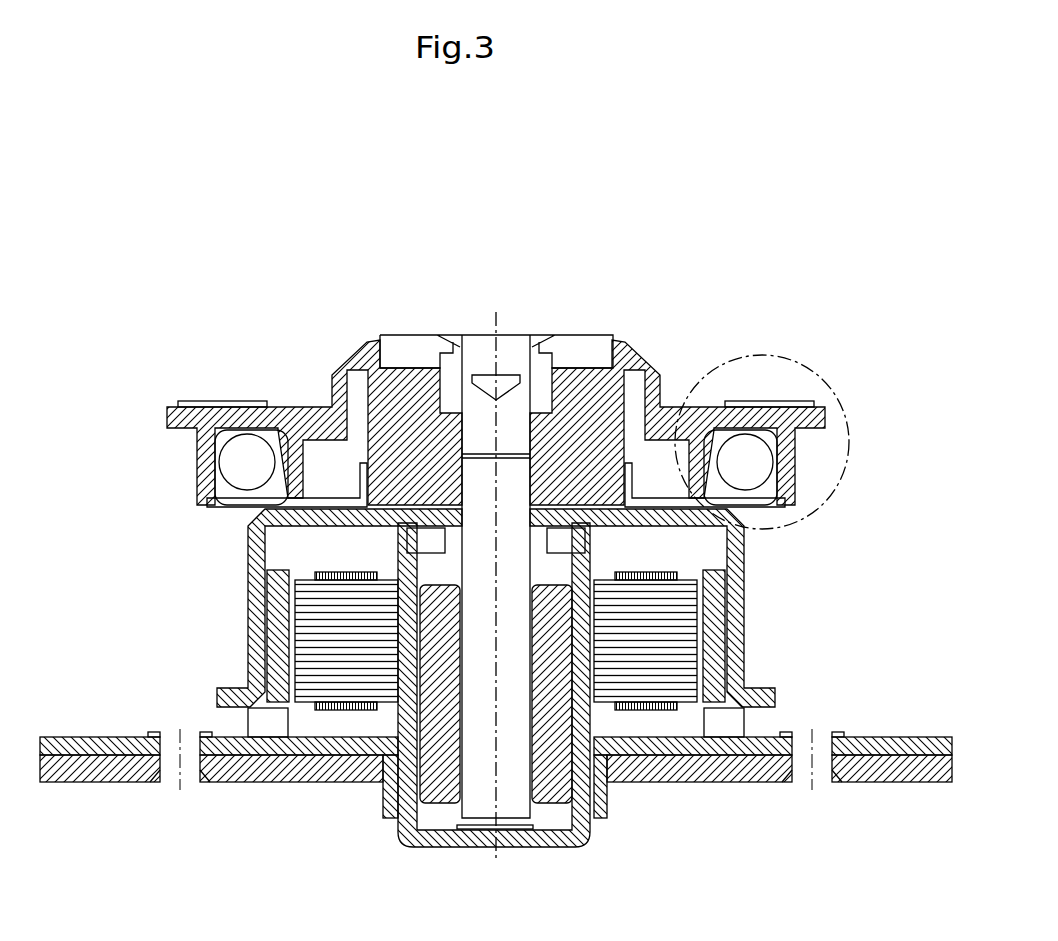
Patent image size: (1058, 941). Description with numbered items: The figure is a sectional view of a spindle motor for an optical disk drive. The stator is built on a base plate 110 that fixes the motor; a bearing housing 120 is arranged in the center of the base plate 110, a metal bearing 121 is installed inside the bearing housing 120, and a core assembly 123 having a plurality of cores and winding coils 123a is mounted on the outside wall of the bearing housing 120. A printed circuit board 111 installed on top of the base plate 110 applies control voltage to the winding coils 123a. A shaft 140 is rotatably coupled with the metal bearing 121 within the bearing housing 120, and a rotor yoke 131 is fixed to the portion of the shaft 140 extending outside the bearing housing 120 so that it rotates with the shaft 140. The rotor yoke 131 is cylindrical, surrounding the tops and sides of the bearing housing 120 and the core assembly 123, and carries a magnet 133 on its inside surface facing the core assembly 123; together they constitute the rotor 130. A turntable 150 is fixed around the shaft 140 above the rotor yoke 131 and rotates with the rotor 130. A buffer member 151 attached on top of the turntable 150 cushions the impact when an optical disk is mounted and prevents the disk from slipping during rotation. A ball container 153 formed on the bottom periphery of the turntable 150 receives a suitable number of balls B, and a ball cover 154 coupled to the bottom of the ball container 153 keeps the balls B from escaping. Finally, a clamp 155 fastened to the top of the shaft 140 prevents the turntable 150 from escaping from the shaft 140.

The base plate 110 is at (888, 780).
The printed circuit board 111 is at (897, 740).
The bearing housing 120 is at (407, 833).
The metal bearing 121 is at (550, 793).
The core assembly 123 is at (307, 665).
The winding coils 123a is at (338, 713).
The rotor 130 is at (479, 604).
The rotor yoke 131 is at (737, 623).
The magnet 133 is at (275, 600).
The shaft 140 is at (482, 805).
The turntable 150 is at (640, 358).
The buffer member 151 is at (772, 398).
The ball container 153 is at (770, 493).
The ball cover 154 is at (763, 505).
The clamp 155 is at (410, 343).
The balls B is at (826, 382).